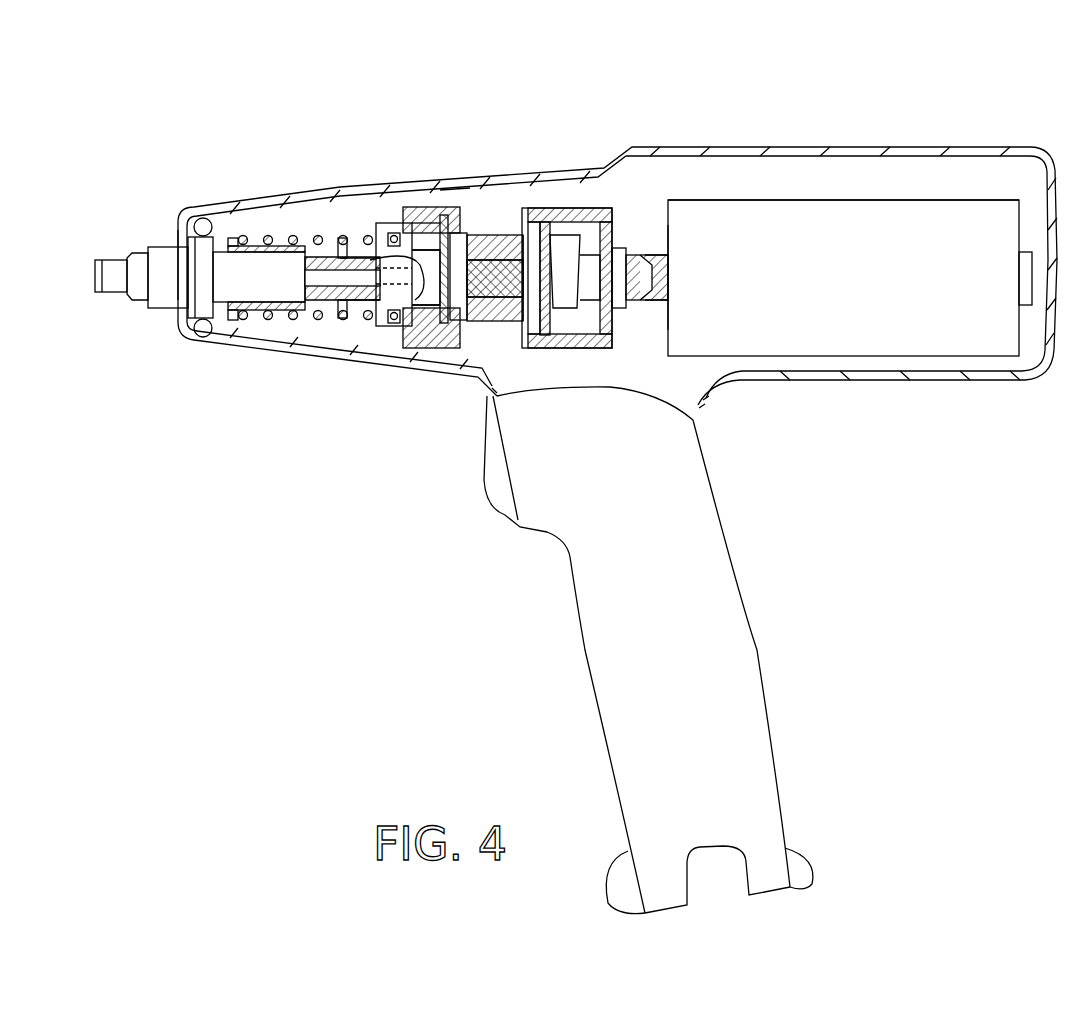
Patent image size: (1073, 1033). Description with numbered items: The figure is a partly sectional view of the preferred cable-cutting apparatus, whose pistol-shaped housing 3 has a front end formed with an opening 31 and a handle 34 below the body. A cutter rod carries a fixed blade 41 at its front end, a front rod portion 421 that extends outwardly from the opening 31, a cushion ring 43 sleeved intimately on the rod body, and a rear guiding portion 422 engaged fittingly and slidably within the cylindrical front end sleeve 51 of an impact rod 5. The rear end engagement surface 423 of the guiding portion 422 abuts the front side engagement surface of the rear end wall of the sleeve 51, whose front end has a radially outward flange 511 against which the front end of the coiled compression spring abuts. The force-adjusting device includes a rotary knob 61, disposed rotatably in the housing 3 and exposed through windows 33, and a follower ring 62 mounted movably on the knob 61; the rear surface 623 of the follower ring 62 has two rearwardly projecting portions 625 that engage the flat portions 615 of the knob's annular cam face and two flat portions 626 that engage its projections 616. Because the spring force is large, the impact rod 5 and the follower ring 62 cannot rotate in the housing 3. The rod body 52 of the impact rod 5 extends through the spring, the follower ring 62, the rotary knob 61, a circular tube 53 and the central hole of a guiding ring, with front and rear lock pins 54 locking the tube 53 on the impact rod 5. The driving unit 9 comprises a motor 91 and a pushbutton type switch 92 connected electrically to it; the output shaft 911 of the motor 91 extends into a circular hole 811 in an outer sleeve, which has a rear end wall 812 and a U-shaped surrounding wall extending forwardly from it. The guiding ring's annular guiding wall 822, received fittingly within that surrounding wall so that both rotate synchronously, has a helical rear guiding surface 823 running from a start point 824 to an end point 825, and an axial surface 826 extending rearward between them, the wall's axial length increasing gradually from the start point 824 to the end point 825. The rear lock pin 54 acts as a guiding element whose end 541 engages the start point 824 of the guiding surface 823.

The housing 3 is at (776, 147).
The opening 31 is at (180, 240).
The windows 33 is at (453, 210).
The handle 34 is at (768, 737).
The fixed blade 41 is at (122, 282).
The front rod portion 421 is at (163, 297).
The rear guiding portion 422 is at (243, 290).
The rear end engagement surface 423 is at (287, 283).
The cushion ring 43 is at (190, 318).
The impact rod 5 is at (305, 246).
The front end sleeve 51 is at (262, 247).
The outward flange 511 is at (230, 240).
The rod body 52 is at (500, 235).
The circular tube 53 is at (487, 258).
The lock pins 54 is at (480, 385).
The end of rear lock pin 541 is at (547, 210).
The rotary knob 61 is at (430, 345).
The flat portions 615 is at (444, 325).
The projections 616 is at (420, 320).
The follower ring 62 is at (378, 323).
The rear surface 623 is at (455, 222).
The rearwardly projecting portions 625 is at (440, 350).
The flat portions 626 is at (405, 325).
The circular hole 811 is at (620, 220).
The rear end wall 812 is at (667, 230).
The annular guiding wall 822 is at (575, 235).
The helical rear guiding surface 823 is at (563, 325).
The start point 824 is at (520, 250).
The end point 825 is at (605, 250).
The axial surface 826 is at (575, 235).
The driving unit 9 is at (876, 200).
The motor 91 is at (958, 200).
The output shaft 911 is at (653, 282).
The pushbutton type switch 92 is at (490, 505).